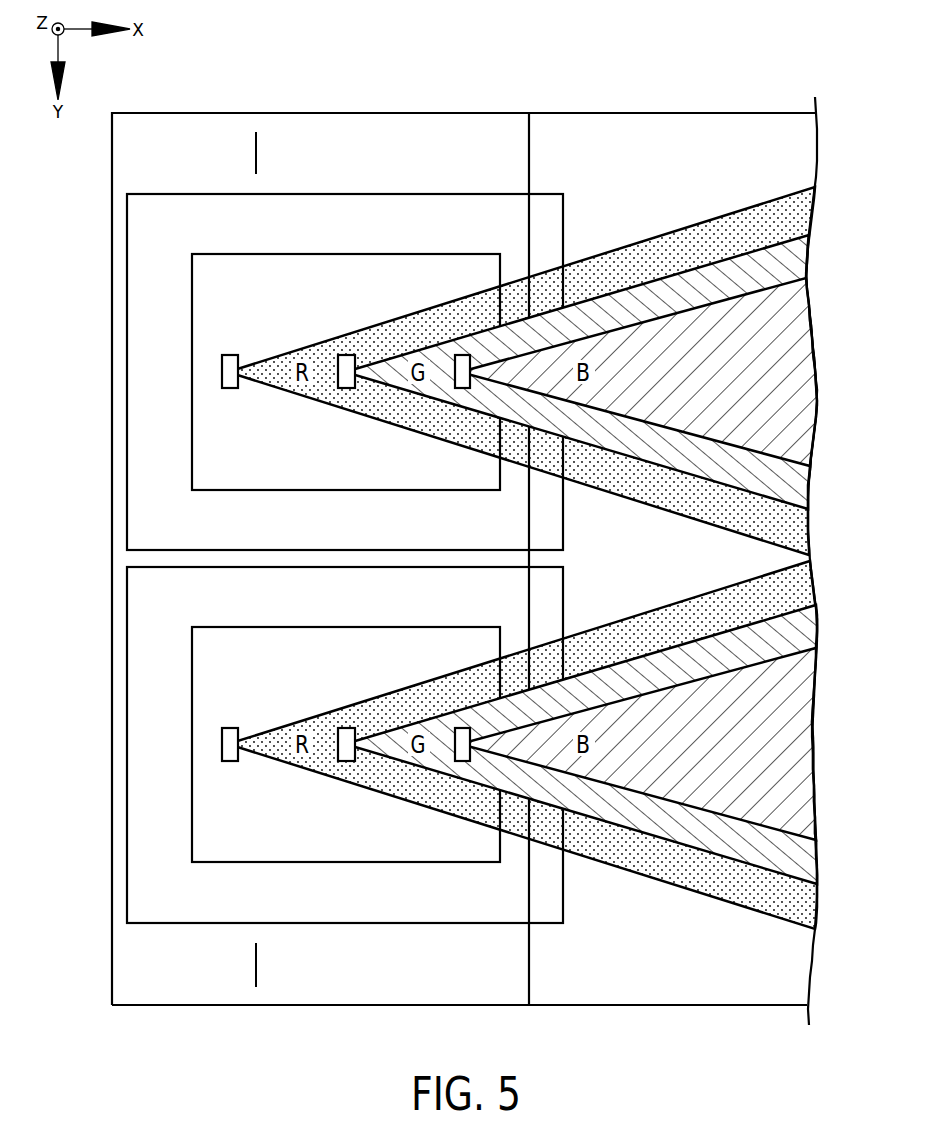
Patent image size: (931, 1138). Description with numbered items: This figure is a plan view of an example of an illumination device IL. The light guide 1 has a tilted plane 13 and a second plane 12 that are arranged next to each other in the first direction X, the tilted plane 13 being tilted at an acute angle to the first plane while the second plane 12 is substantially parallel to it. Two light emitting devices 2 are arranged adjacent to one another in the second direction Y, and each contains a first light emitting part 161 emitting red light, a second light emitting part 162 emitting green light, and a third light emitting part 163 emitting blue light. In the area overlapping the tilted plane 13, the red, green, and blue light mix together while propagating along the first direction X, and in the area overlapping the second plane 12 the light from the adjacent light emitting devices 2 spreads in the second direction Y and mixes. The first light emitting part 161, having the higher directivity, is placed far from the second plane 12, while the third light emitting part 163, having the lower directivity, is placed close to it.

The light guide 1 is at (677, 113).
The light emitting device 2 is at (192, 299).
The second plane 12 is at (606, 112).
The tilted plane 13 is at (320, 112).
The first light emitting part 161 is at (230, 388).
The second light emitting part 162 is at (346, 388).
The third light emitting part 163 is at (462, 388).
The illumination device IL is at (846, 100).